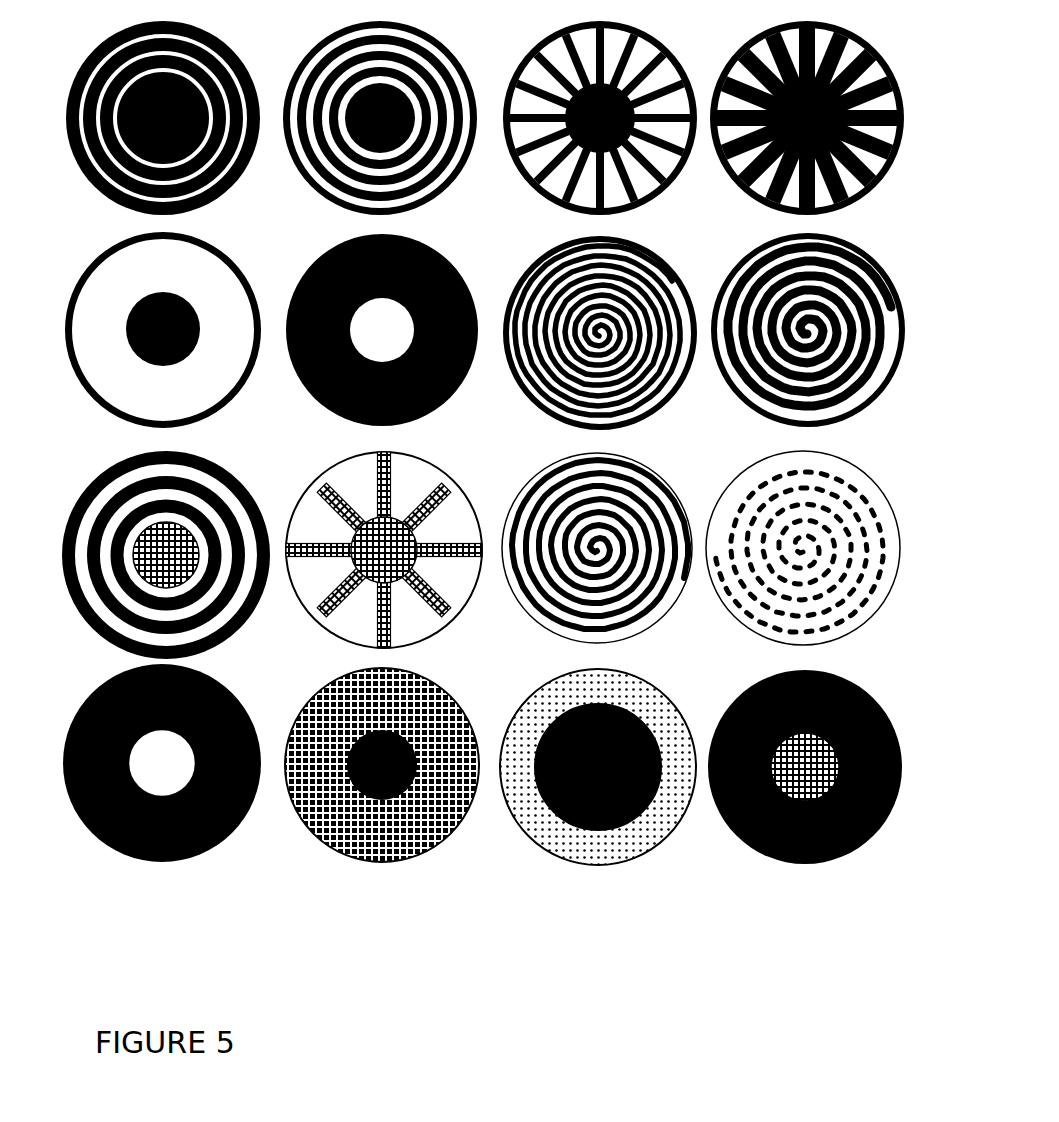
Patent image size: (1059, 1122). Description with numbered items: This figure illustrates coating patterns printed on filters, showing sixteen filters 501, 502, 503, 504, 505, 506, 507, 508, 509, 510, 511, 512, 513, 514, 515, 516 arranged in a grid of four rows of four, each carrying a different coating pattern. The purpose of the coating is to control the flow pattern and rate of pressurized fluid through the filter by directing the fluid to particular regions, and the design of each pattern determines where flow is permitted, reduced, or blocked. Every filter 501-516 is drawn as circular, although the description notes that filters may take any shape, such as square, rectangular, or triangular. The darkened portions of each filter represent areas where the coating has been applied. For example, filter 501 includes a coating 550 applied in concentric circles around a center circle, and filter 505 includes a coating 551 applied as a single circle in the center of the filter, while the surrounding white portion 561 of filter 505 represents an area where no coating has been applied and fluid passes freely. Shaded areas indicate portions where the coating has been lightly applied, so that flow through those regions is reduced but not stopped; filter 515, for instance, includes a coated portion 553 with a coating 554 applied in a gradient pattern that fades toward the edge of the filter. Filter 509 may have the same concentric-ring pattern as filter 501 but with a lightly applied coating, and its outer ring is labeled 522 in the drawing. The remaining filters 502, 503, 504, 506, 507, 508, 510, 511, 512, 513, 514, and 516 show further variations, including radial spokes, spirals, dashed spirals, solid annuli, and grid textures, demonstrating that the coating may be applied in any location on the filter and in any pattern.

The filter 501 is at (162, 121).
The filter 502 is at (396, 124).
The filter 503 is at (615, 124).
The filter 504 is at (822, 124).
The filter 505 is at (145, 337).
The filter 506 is at (396, 337).
The filter 507 is at (612, 338).
The filter 508 is at (822, 334).
The filter 509 is at (148, 558).
The filter 510 is at (396, 553).
The filter 511 is at (610, 554).
The filter 512 is at (816, 554).
The filter 513 is at (174, 769).
The filter 514 is at (393, 770).
The filter 515 is at (611, 789).
The filter 516 is at (820, 770).
The coating 550 is at (97, 198).
The coating 551 is at (140, 358).
The portion 561 is at (103, 300).
The crosshatched outer ring 522 is at (82, 622).
The coated portion 553 is at (580, 800).
The coating 554 is at (590, 845).